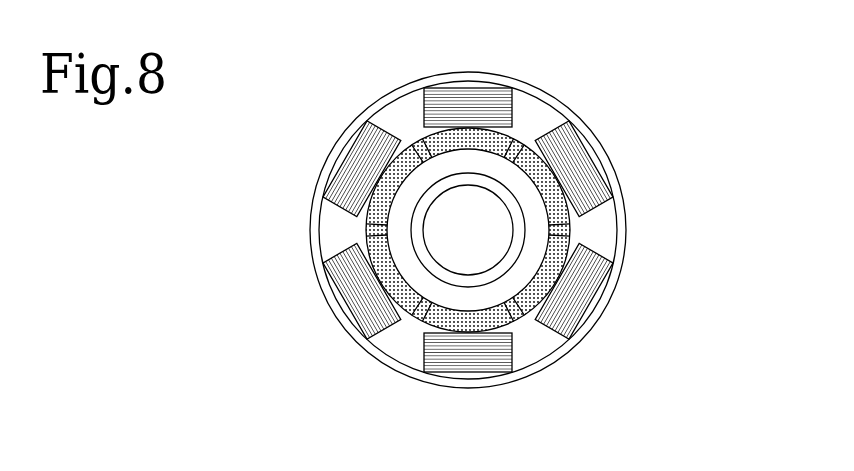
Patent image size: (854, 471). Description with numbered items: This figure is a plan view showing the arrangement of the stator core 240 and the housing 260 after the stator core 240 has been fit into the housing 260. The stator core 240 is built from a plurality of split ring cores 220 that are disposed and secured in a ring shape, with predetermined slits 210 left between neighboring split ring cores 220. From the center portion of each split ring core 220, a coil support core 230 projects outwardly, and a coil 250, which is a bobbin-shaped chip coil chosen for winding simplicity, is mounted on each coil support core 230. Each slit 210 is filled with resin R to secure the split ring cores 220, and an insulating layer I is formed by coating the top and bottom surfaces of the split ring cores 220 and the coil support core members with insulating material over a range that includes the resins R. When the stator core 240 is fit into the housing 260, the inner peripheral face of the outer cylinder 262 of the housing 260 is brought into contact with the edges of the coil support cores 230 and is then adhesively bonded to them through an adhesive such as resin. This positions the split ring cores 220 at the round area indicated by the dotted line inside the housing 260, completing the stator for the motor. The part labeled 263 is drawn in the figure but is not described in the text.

The slit 210 is at (574, 232).
The split ring core 220 is at (407, 157).
The coil support core 230 is at (467, 88).
The stator core 240 is at (410, 321).
The coil 250 is at (544, 127).
The housing 260 is at (637, 268).
The outer cylinder 262 is at (617, 288).
The bearing 263 is at (528, 221).
The insulating layer I is at (545, 302).
The resin R is at (519, 305).